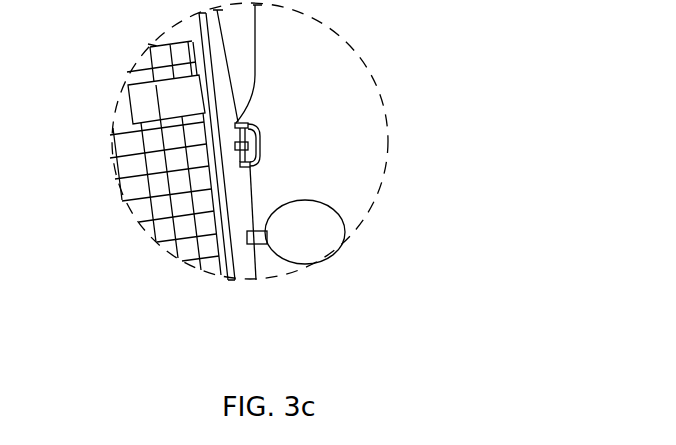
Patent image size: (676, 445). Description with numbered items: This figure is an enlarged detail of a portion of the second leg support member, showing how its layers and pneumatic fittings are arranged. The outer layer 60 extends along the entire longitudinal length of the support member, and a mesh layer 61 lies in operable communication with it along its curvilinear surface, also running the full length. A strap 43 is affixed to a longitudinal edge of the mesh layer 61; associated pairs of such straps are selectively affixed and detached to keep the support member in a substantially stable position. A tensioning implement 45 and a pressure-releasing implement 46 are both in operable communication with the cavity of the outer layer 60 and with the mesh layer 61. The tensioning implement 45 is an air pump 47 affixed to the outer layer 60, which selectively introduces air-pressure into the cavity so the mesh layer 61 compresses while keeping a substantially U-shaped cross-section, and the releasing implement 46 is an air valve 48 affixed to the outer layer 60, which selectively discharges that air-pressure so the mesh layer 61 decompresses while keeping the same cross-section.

The strap 43 is at (128, 108).
The tensioning implement 45 is at (362, 289).
The pressure-releasing implement 46 is at (288, 169).
The air pump 47 is at (317, 230).
The air valve 48 is at (258, 146).
The outer layer 60 is at (223, 103).
The mesh layer 61 is at (140, 178).